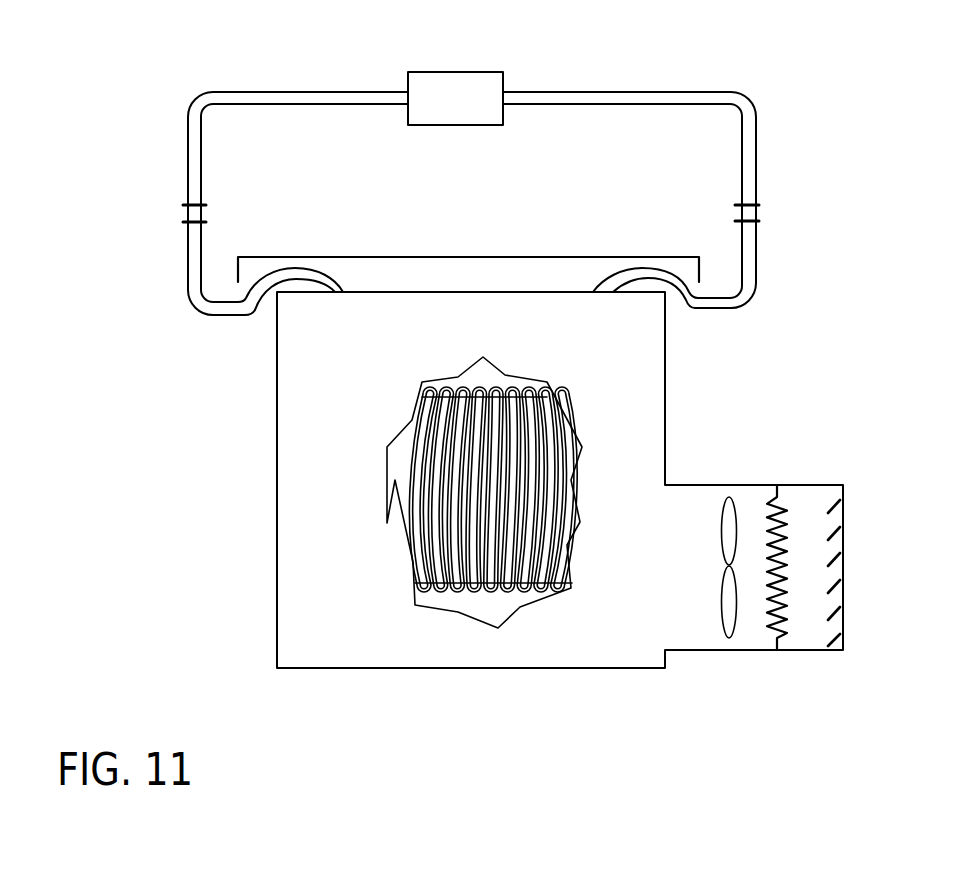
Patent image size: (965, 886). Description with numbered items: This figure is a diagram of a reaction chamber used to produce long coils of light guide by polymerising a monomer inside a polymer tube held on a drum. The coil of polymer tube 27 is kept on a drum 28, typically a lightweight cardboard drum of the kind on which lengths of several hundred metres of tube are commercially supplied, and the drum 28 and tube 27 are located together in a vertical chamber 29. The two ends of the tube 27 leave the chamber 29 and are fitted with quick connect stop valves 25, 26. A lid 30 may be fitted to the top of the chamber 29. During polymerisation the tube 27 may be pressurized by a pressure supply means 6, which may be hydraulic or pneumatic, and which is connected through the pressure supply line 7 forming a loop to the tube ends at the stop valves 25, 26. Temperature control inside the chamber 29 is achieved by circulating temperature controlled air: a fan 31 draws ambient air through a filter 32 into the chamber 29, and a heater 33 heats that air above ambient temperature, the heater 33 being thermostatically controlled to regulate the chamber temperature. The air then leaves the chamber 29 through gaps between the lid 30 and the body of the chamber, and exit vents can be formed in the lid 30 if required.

The pressure supply means 6 is at (467, 111).
The pressure supply line 7 is at (565, 97).
The quick connect stop valve 25 is at (745, 214).
The quick connect stop valve 26 is at (193, 212).
The polymer tube 27 is at (552, 468).
The drum 28 is at (490, 393).
The vertical chamber 29 is at (369, 608).
The lid 30 is at (473, 255).
The fan 31 is at (730, 612).
The filter 32 is at (842, 588).
The heater 33 is at (780, 508).